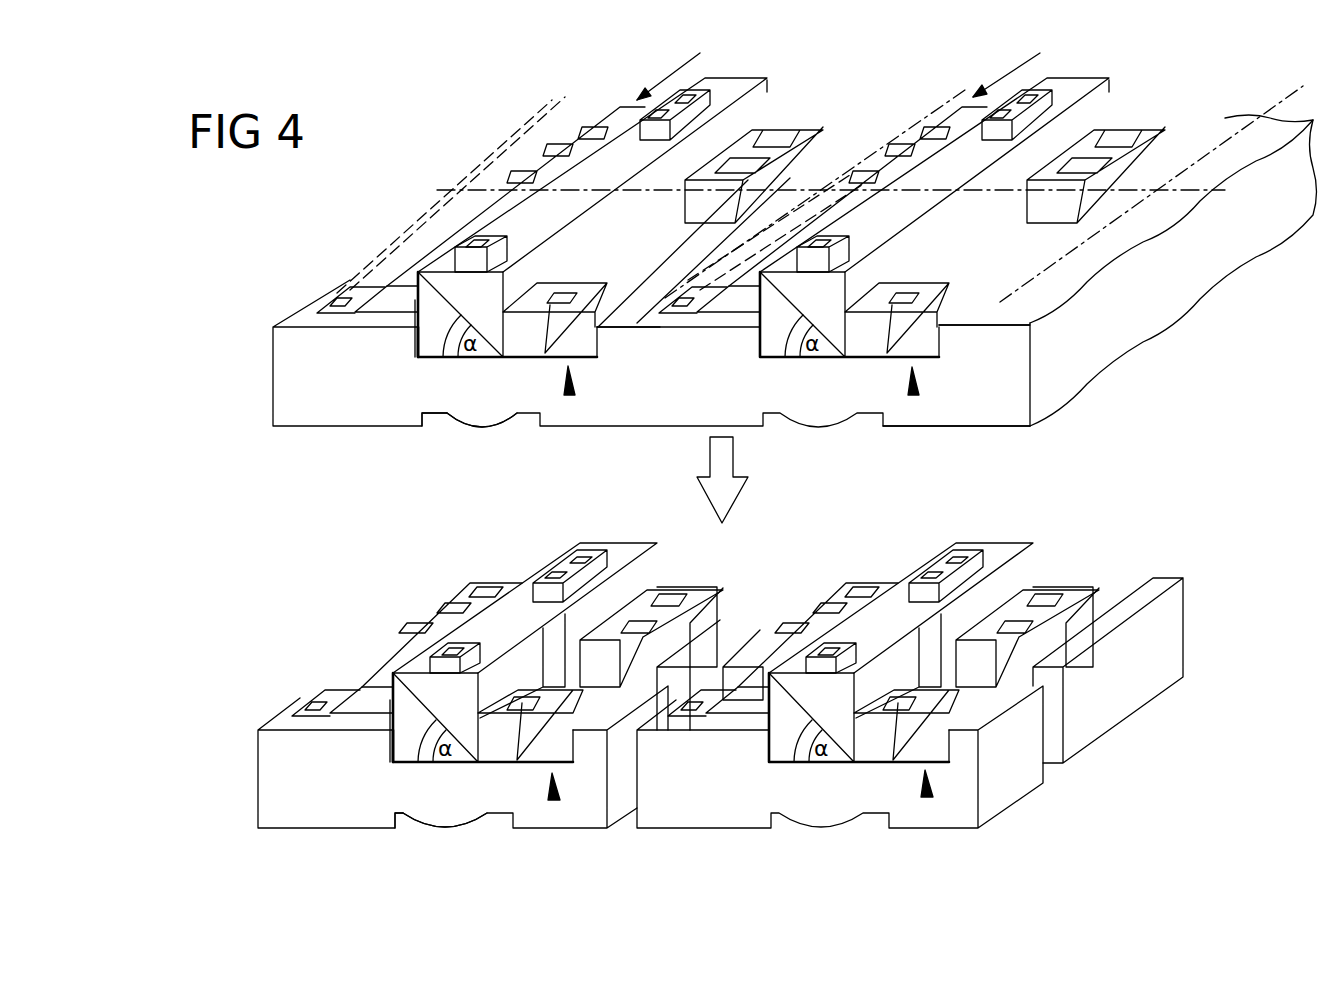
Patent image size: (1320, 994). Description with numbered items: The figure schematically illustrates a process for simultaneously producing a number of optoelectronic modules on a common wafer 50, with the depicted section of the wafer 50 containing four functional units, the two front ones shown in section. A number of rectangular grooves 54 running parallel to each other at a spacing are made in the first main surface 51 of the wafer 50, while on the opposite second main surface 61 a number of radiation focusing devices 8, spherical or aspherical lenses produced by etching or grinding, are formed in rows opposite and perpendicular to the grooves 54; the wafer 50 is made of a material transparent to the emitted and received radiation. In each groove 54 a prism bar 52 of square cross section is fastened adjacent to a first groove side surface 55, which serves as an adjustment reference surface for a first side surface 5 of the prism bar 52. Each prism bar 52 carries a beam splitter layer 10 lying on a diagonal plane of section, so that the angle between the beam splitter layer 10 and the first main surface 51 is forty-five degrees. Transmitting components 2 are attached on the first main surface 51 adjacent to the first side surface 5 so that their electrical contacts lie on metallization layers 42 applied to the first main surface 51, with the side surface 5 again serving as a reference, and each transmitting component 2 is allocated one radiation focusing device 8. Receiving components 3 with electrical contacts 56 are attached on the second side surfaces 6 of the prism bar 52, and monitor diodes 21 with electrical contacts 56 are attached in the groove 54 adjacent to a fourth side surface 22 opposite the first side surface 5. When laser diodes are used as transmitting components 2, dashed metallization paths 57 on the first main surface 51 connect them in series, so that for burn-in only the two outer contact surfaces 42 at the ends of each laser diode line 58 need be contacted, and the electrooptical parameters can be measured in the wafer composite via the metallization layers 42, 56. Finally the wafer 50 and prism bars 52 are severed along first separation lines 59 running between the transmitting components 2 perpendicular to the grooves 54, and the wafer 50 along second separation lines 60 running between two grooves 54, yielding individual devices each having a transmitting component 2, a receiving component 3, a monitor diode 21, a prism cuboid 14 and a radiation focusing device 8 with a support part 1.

The support part 1 is at (307, 817).
The transmitting component 2 is at (593, 130).
The receiving component 3 is at (637, 122).
The first side surface 5 is at (422, 350).
The second side surface 6 is at (617, 173).
The radiation focusing device 8 is at (480, 430).
The beam splitter layer 10 is at (455, 358).
The prism cuboid 14 is at (527, 640).
The monitor diode 21 is at (818, 123).
The fourth side surface 22 is at (768, 128).
The metallization layer 42 is at (518, 170).
The wafer 50 is at (1120, 327).
The first main surface 51 is at (1103, 252).
The prism bar 52 is at (621, 253).
The groove 54 is at (572, 395).
The first groove side surface 55 is at (420, 333).
The electrical contact 56 is at (740, 160).
The metallization path 57 is at (433, 230).
The laser diode line 58 is at (660, 78).
The first separation line 59 is at (1215, 193).
The second separation line 60 is at (617, 335).
The second main surface 61 is at (997, 428).